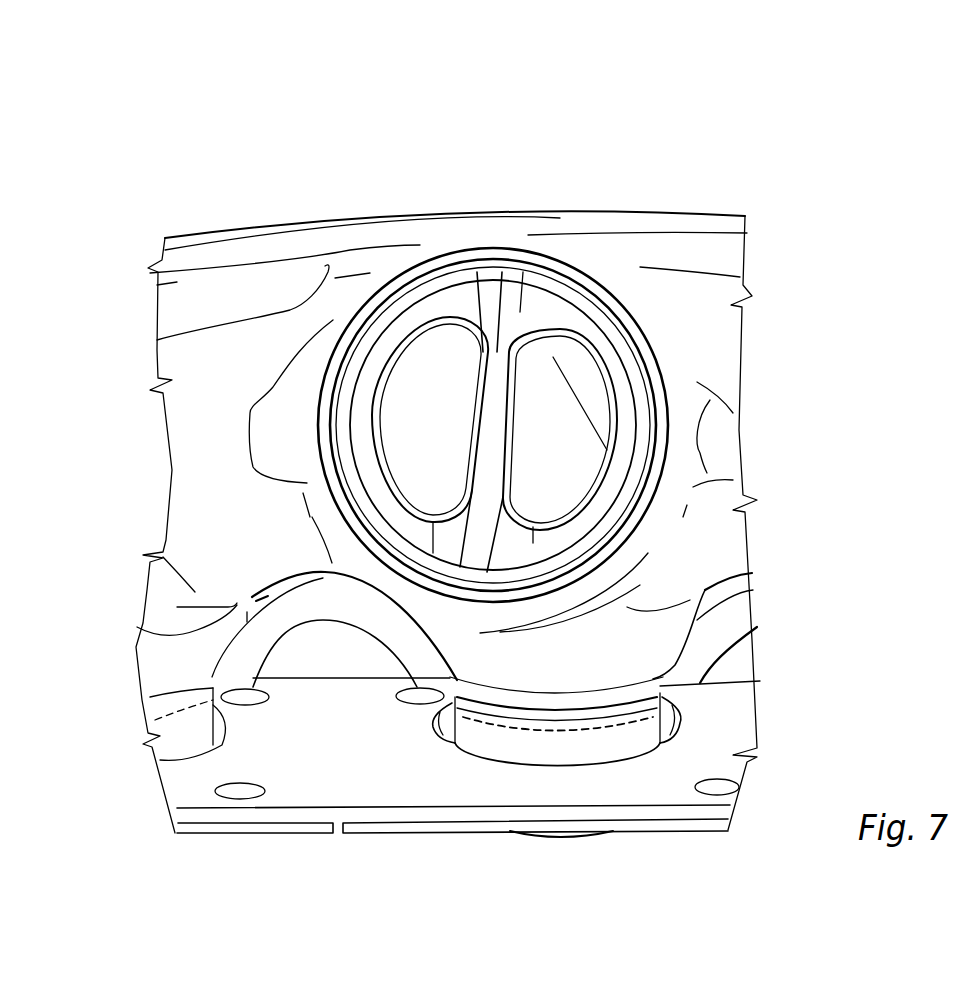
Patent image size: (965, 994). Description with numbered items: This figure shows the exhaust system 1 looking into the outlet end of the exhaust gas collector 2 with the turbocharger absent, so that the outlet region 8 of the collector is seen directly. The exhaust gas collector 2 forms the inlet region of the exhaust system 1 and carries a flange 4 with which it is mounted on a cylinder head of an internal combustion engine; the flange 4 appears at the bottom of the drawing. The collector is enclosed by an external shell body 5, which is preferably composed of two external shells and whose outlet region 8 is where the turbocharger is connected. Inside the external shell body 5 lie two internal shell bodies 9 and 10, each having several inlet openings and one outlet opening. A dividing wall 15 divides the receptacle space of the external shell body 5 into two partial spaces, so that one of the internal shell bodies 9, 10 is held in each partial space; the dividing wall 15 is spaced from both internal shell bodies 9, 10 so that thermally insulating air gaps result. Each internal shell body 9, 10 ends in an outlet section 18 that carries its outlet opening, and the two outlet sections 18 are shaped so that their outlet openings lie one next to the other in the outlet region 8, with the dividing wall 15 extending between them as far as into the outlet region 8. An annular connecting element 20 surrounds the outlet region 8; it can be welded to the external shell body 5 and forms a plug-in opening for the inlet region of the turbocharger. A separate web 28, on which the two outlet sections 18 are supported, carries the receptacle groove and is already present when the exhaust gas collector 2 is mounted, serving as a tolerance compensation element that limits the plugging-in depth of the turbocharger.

The exhaust system 1 is at (843, 205).
The exhaust gas collector 2 is at (448, 477).
The flange 4 is at (364, 828).
The external shell body 5 is at (346, 220).
The outlet region 8 is at (657, 350).
The internal shell body 9 is at (457, 300).
The internal shell body 10 is at (596, 341).
The dividing wall 15 is at (488, 298).
The outlet section 18 is at (417, 343).
The connecting element 20 is at (581, 425).
The web 28 is at (512, 310).